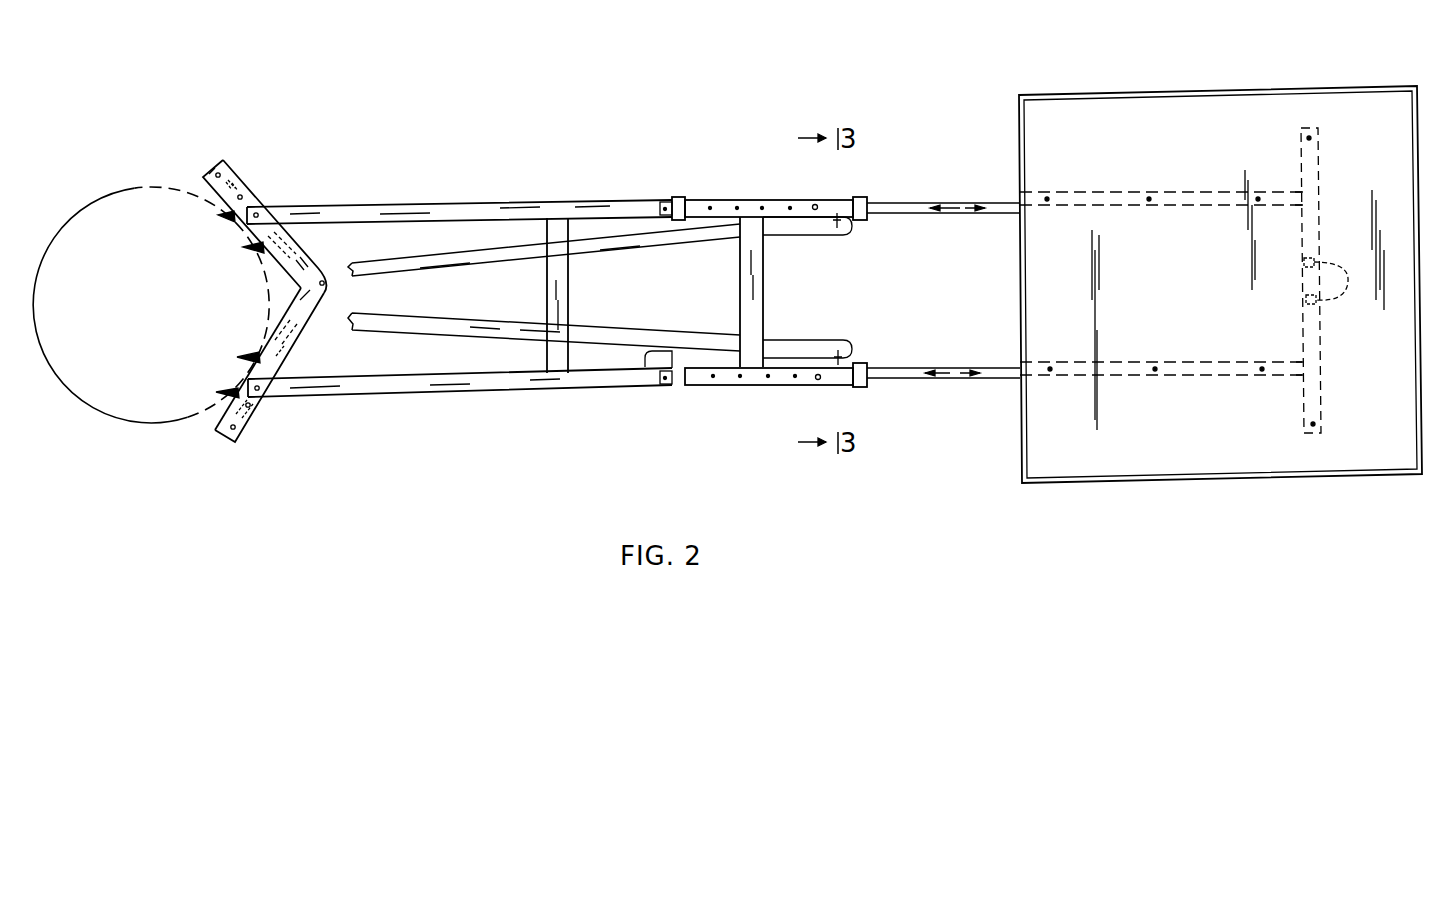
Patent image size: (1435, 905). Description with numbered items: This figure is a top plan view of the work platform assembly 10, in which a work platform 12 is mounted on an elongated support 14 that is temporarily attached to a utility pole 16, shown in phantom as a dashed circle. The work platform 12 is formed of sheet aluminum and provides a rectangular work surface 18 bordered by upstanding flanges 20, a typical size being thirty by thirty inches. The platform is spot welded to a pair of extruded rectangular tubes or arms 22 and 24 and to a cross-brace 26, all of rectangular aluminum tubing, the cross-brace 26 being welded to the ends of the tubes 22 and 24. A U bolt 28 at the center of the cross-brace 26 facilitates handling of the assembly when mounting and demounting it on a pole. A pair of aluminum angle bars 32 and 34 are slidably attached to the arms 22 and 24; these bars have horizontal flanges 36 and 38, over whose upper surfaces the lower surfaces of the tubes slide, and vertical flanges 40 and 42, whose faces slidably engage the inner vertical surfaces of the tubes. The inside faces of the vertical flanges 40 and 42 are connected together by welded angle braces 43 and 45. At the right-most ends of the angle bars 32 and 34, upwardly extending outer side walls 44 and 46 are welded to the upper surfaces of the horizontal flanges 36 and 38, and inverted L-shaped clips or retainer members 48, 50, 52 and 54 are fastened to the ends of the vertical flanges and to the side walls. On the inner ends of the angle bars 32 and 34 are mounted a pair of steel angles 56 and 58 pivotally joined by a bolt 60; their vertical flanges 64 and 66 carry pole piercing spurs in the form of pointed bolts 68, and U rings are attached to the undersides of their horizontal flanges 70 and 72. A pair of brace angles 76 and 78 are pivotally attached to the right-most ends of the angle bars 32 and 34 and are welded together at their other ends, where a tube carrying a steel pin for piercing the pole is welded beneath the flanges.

The work platform assembly 10 is at (636, 76).
The work platform 12 is at (1232, 88).
The elongated support 14 is at (886, 295).
The utility pole 16 is at (117, 190).
The work surface 18 is at (1207, 155).
The upstanding flanges 20 is at (1098, 98).
The rectangular tube 22 is at (952, 200).
The rectangular tube 24 is at (990, 382).
The cross-brace 26 is at (1318, 188).
The U bolt 28 is at (1346, 300).
The angle bar 32 is at (495, 205).
The angle bar 34 is at (385, 397).
The horizontal flange 36 is at (398, 211).
The horizontal flange 38 is at (467, 392).
The vertical flange 40 is at (330, 228).
The vertical flange 42 is at (405, 373).
The angle brace 43 is at (557, 288).
The outer side wall 44 is at (722, 202).
The angle brace 45 is at (729, 292).
The outer side wall 46 is at (708, 385).
The retainer member 48 is at (862, 197).
The retainer member 50 is at (677, 197).
The retainer member 52 is at (862, 366).
The retainer member 54 is at (660, 360).
The steel angle 56 is at (236, 170).
The steel angle 58 is at (257, 403).
The bolt 60 is at (330, 287).
The vertical flange 64 is at (205, 180).
The vertical flange 66 is at (215, 428).
The pointed bolts 68 is at (250, 247).
The horizontal flange 70 is at (233, 184).
The horizontal flange 72 is at (277, 363).
The brace angle 76 is at (617, 250).
The brace angle 78 is at (652, 327).